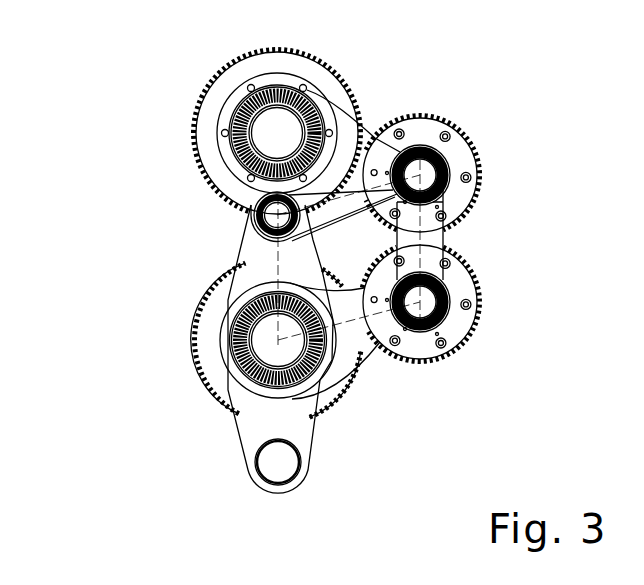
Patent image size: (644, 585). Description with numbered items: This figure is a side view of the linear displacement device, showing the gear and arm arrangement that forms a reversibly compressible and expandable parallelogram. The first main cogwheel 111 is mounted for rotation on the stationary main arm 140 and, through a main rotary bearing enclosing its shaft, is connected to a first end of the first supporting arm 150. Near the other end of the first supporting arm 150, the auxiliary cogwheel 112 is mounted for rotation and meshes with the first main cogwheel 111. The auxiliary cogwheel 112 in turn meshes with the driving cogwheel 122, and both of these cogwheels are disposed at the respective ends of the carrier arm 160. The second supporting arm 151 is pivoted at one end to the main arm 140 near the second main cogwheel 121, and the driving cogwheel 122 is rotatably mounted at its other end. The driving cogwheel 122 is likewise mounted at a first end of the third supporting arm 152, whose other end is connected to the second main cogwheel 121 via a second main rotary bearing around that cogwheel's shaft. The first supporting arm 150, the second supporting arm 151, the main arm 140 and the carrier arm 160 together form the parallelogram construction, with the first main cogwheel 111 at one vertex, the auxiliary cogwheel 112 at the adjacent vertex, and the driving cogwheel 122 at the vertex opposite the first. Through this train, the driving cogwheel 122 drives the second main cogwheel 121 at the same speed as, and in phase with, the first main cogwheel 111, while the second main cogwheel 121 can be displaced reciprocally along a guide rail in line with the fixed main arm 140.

The second main cogwheel 121 is at (232, 72).
The third supporting arm 152 is at (343, 127).
The driving cogwheel 122 is at (463, 143).
The carrier arm 160 is at (452, 229).
The auxiliary cogwheel 112 is at (478, 273).
The second supporting arm 151 is at (262, 243).
The main arm 140 is at (250, 262).
The first main cogwheel 111 is at (207, 345).
The first supporting arm 150 is at (363, 350).